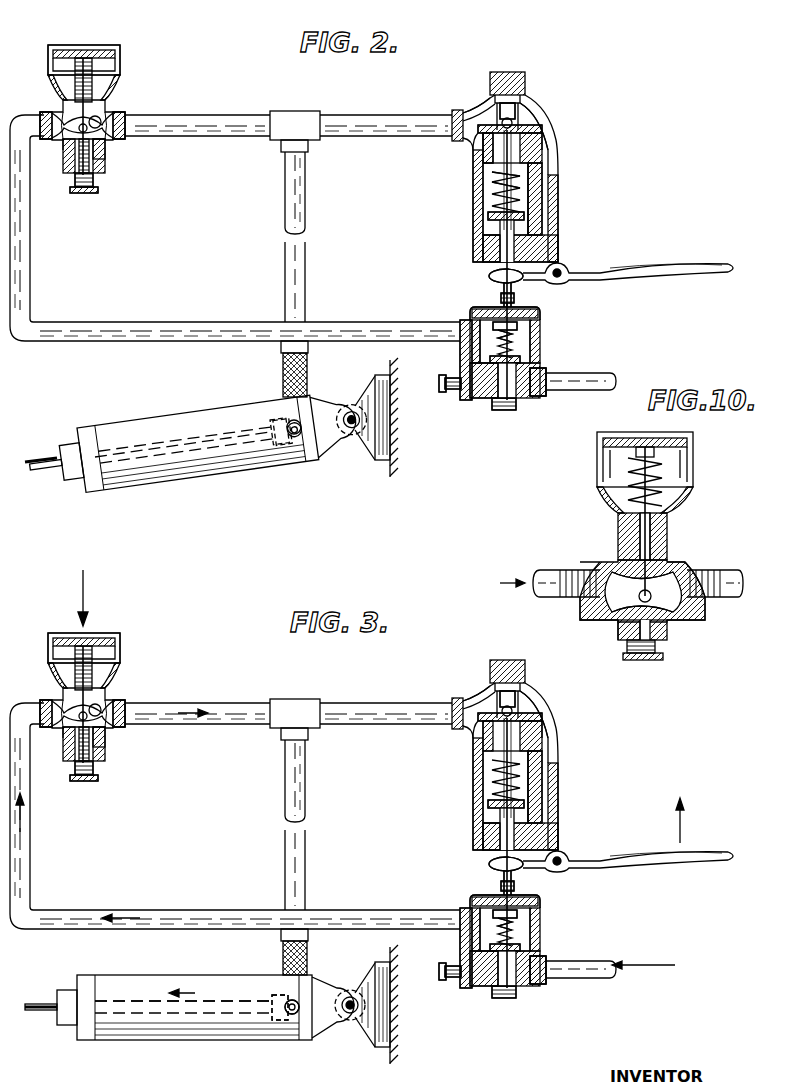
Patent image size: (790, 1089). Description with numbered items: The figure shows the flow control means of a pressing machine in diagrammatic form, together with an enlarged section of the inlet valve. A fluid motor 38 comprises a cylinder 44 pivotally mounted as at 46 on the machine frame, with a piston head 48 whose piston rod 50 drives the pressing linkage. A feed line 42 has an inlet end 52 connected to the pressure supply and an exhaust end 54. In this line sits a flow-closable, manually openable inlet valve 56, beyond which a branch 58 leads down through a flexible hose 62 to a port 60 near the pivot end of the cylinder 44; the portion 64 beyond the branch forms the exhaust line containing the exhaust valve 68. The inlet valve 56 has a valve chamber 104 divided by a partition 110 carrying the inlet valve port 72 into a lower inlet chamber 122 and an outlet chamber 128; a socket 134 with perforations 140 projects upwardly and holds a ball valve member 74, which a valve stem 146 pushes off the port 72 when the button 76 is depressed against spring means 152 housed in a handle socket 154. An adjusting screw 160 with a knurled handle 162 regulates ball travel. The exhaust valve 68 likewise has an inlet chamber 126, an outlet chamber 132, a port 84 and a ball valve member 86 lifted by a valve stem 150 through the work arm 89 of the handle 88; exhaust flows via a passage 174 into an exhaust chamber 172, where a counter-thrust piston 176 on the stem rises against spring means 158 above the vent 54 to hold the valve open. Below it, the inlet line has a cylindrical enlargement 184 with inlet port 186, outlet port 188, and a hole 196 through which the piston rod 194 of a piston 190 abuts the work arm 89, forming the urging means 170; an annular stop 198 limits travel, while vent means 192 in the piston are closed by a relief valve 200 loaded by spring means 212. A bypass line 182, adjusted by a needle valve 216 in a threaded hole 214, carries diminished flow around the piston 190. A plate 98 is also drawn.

In FIG. 2, the fluid motor 38 is at (157, 417).
In FIG. 3, the fluid motor 38 is at (134, 1038).
In FIG. 2, the feed line 42 is at (208, 118).
In FIG. 3, the feed line 42 is at (208, 703).
In FIG. 10, the feed line 42 is at (543, 572).
In FIG. 2, the cylinder 44 is at (210, 414).
In FIG. 3, the cylinder 44 is at (190, 982).
In FIG. 2, the pivotal mounting 46 is at (347, 412).
In FIG. 3, the pivotal mounting 46 is at (348, 993).
In FIG. 2, the piston head 48 is at (263, 470).
In FIG. 3, the piston head 48 is at (237, 1045).
In FIG. 2, the piston rod 50 is at (33, 463).
In FIG. 3, the piston rod 50 is at (32, 1007).
In FIG. 2, the inlet end 52 is at (591, 374).
In FIG. 3, the inlet end 52 is at (604, 960).
In FIG. 2, the exhaust end 54 is at (489, 209).
In FIG. 3, the exhaust end 54 is at (489, 795).
In FIG. 2, the inlet valve 56 is at (95, 128).
In FIG. 3, the inlet valve 56 is at (92, 708).
In FIG. 10, the inlet valve 56 is at (663, 528).
In FIG. 2, the branch 58 is at (305, 212).
In FIG. 3, the branch 58 is at (305, 800).
In FIG. 2, the port 60 is at (295, 470).
In FIG. 3, the port 60 is at (292, 1043).
In FIG. 2, the flexible hose 62 is at (307, 380).
In FIG. 3, the flexible hose 62 is at (305, 963).
In FIG. 2, the exhaust line portion 64 is at (406, 118).
In FIG. 3, the exhaust line portion 64 is at (406, 706).
In FIG. 2, the exhaust valve 68 is at (556, 192).
In FIG. 3, the exhaust valve 68 is at (556, 780).
In FIG. 2, the inlet valve port 72 is at (100, 122).
In FIG. 3, the inlet valve port 72 is at (105, 704).
In FIG. 10, the inlet valve port 72 is at (640, 580).
In FIG. 2, the valve member 74 is at (103, 145).
In FIG. 3, the valve member 74 is at (105, 735).
In FIG. 10, the valve member 74 is at (670, 567).
In FIG. 2, the handle 76 is at (95, 47).
In FIG. 3, the handle 76 is at (93, 650).
In FIG. 10, the handle 76 is at (686, 432).
In FIG. 2, the valve port 84 is at (525, 127).
In FIG. 3, the valve port 84 is at (525, 715).
In FIG. 2, the movable valve member 86 is at (521, 111).
In FIG. 3, the movable valve member 86 is at (521, 699).
In FIG. 2, the handle 88 is at (682, 262).
In FIG. 3, the handle 88 is at (672, 858).
In FIG. 2, the work arm 89 is at (489, 277).
In FIG. 3, the plate 98 is at (489, 865).
In FIG. 10, the valve chamber 104 is at (680, 567).
In FIG. 10, the partition 110 is at (638, 585).
In FIG. 2, the inlet chamber 122 is at (63, 143).
In FIG. 3, the inlet chamber 122 is at (63, 730).
In FIG. 10, the inlet chamber 122 is at (613, 597).
In FIG. 2, the inlet chamber 126 is at (482, 111).
In FIG. 3, the inlet chamber 126 is at (482, 699).
In FIG. 2, the outlet chamber 128 is at (117, 116).
In FIG. 3, the outlet chamber 128 is at (120, 703).
In FIG. 10, the outlet chamber 128 is at (685, 600).
In FIG. 2, the outlet chamber 132 is at (548, 151).
In FIG. 3, the outlet chamber 132 is at (548, 739).
In FIG. 10, the socket 134 is at (628, 628).
In FIG. 10, the perforations 140 is at (628, 612).
In FIG. 2, the valve stem 146 is at (62, 115).
In FIG. 3, the valve stem 146 is at (62, 702).
In FIG. 10, the valve stem 146 is at (643, 509).
In FIG. 2, the valve stem 150 is at (494, 153).
In FIG. 10, the spring means 152 is at (630, 471).
In FIG. 10, the handle socket 154 is at (598, 461).
In FIG. 2, the spring means 158 is at (494, 173).
In FIG. 2, the adjusting screw 160 is at (90, 182).
In FIG. 3, the adjusting screw 160 is at (92, 770).
In FIG. 10, the adjusting screw 160 is at (653, 648).
In FIG. 2, the knurled handle 162 is at (85, 193).
In FIG. 3, the knurled handle 162 is at (85, 780).
In FIG. 10, the knurled handle 162 is at (652, 660).
In FIG. 2, the urging means 170 is at (541, 335).
In FIG. 3, the urging means 170 is at (541, 923).
In FIG. 2, the exhaust chamber 172 is at (492, 190).
In FIG. 2, the passage 174 is at (541, 172).
In FIG. 3, the passage 174 is at (541, 760).
In FIG. 2, the counter-thrust piston 176 is at (480, 232).
In FIG. 3, the counter-thrust piston 176 is at (480, 820).
In FIG. 2, the bypass line 182 is at (470, 396).
In FIG. 3, the bypass line 182 is at (470, 984).
In FIG. 2, the cylindrical enlargement 184 is at (480, 346).
In FIG. 3, the cylindrical enlargement 184 is at (480, 934).
In FIG. 2, the inlet port 186 is at (541, 370).
In FIG. 3, the inlet port 186 is at (560, 958).
In FIG. 2, the outlet port 188 is at (478, 323).
In FIG. 3, the outlet port 188 is at (478, 911).
In FIG. 2, the piston 190 is at (539, 396).
In FIG. 3, the piston 190 is at (539, 984).
In FIG. 2, the vent means 192 is at (490, 397).
In FIG. 3, the vent means 192 is at (490, 985).
In FIG. 2, the piston rod 194 is at (513, 298).
In FIG. 3, the piston rod 194 is at (513, 886).
In FIG. 2, the hole 196 is at (500, 301).
In FIG. 3, the hole 196 is at (500, 889).
In FIG. 2, the annular stop 198 is at (518, 327).
In FIG. 3, the annular stop 198 is at (518, 915).
In FIG. 2, the relief valve 200 is at (520, 359).
In FIG. 3, the relief valve 200 is at (520, 947).
In FIG. 2, the spring means 212 is at (522, 342).
In FIG. 3, the spring means 212 is at (522, 929).
In FIG. 2, the threaded hole 214 is at (458, 381).
In FIG. 3, the threaded hole 214 is at (458, 969).
In FIG. 2, the needle valve 216 is at (447, 391).
In FIG. 3, the needle valve 216 is at (447, 979).